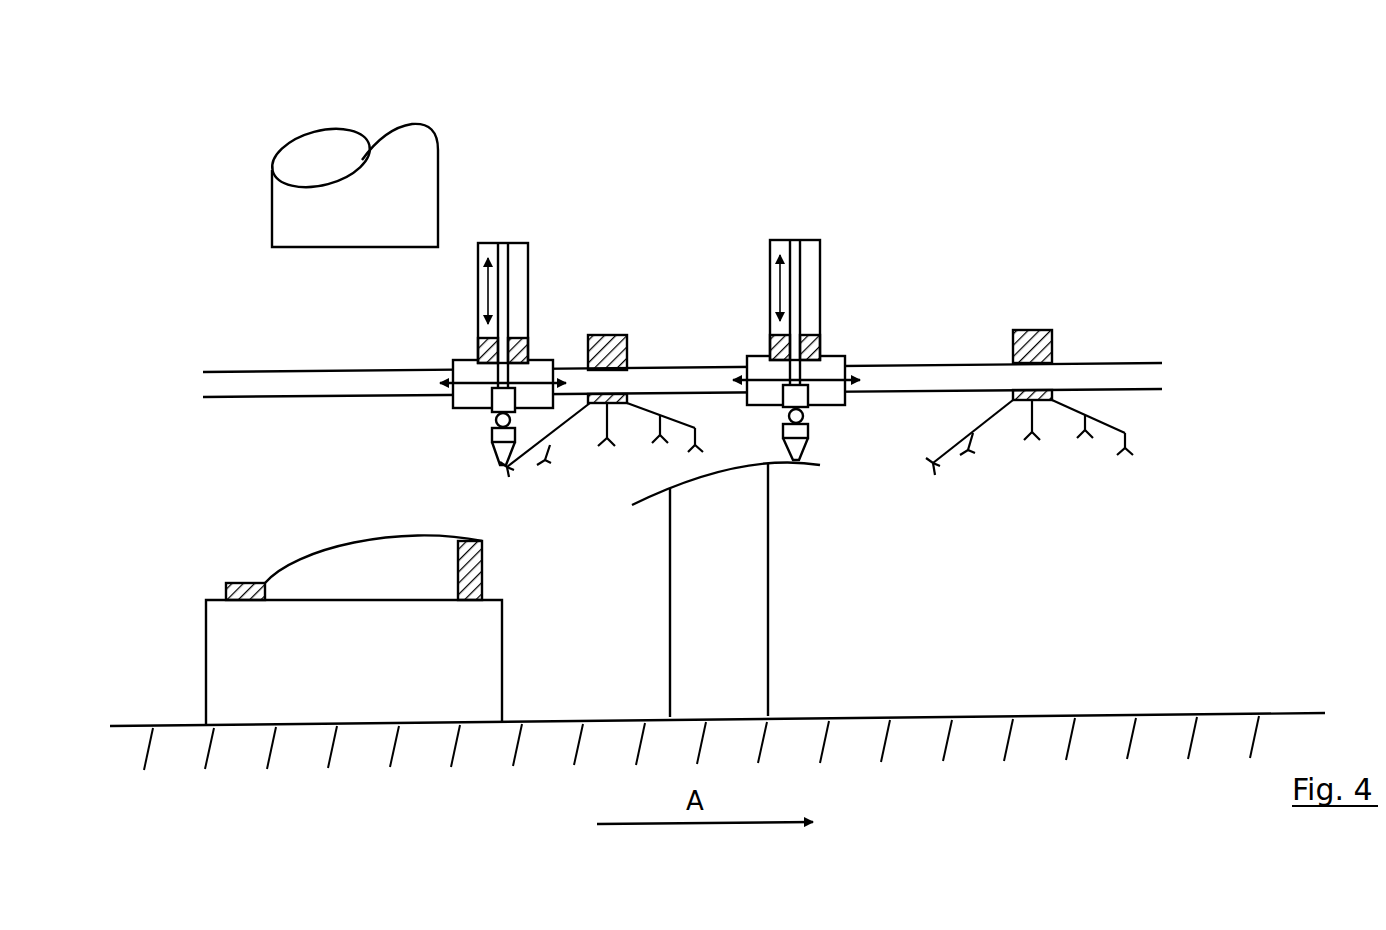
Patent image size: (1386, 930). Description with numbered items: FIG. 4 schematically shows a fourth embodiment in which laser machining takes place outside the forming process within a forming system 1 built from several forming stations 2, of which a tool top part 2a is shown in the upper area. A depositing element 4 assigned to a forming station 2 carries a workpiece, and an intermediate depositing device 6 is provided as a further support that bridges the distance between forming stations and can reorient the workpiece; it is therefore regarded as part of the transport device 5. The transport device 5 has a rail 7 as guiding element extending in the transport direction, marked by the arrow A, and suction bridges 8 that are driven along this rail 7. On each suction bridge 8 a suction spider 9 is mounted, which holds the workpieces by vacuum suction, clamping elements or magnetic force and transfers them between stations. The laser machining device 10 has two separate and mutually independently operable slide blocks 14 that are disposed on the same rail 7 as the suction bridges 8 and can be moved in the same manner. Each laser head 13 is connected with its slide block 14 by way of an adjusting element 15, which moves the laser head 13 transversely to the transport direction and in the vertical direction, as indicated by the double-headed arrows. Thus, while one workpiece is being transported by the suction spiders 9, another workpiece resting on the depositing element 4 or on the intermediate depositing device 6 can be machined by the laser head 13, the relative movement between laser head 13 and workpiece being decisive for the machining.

The forming system 1 is at (682, 265).
The forming station 2 is at (340, 692).
The tool top part 2a is at (410, 197).
The depositing element 4 is at (350, 542).
The transport device 5 is at (367, 355).
The intermediate depositing device 6 is at (705, 475).
The rail 7 is at (330, 380).
The suction bridge 8 is at (617, 357).
The suction spider 9 is at (560, 428).
The laser machining device 10 is at (477, 440).
The laser head 13 is at (500, 455).
The slide block 14 is at (463, 367).
The adjusting element 15 is at (518, 303).